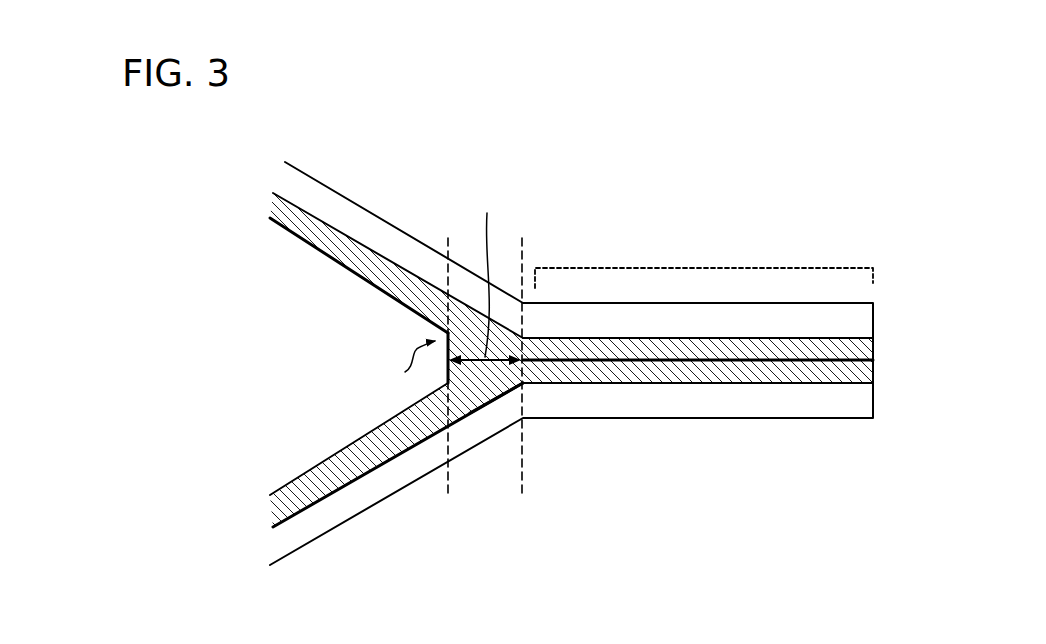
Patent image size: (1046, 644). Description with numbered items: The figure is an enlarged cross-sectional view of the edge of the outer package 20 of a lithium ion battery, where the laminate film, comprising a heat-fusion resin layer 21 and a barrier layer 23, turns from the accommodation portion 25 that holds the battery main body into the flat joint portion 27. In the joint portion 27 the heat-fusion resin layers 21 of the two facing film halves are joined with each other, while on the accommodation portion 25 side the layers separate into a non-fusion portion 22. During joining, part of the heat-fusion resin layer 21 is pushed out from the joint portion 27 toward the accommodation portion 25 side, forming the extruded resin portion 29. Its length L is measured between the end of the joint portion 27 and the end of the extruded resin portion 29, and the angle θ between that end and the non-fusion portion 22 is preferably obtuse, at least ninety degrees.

The outer package 20 is at (568, 204).
The heat-fusion resin layer 21 is at (777, 373).
The non-fusion portion 22 is at (375, 272).
The barrier layer 23 is at (367, 490).
The accommodation portion 25 is at (326, 292).
The joint portion 27 is at (703, 264).
The extruded resin portion 29 is at (497, 398).